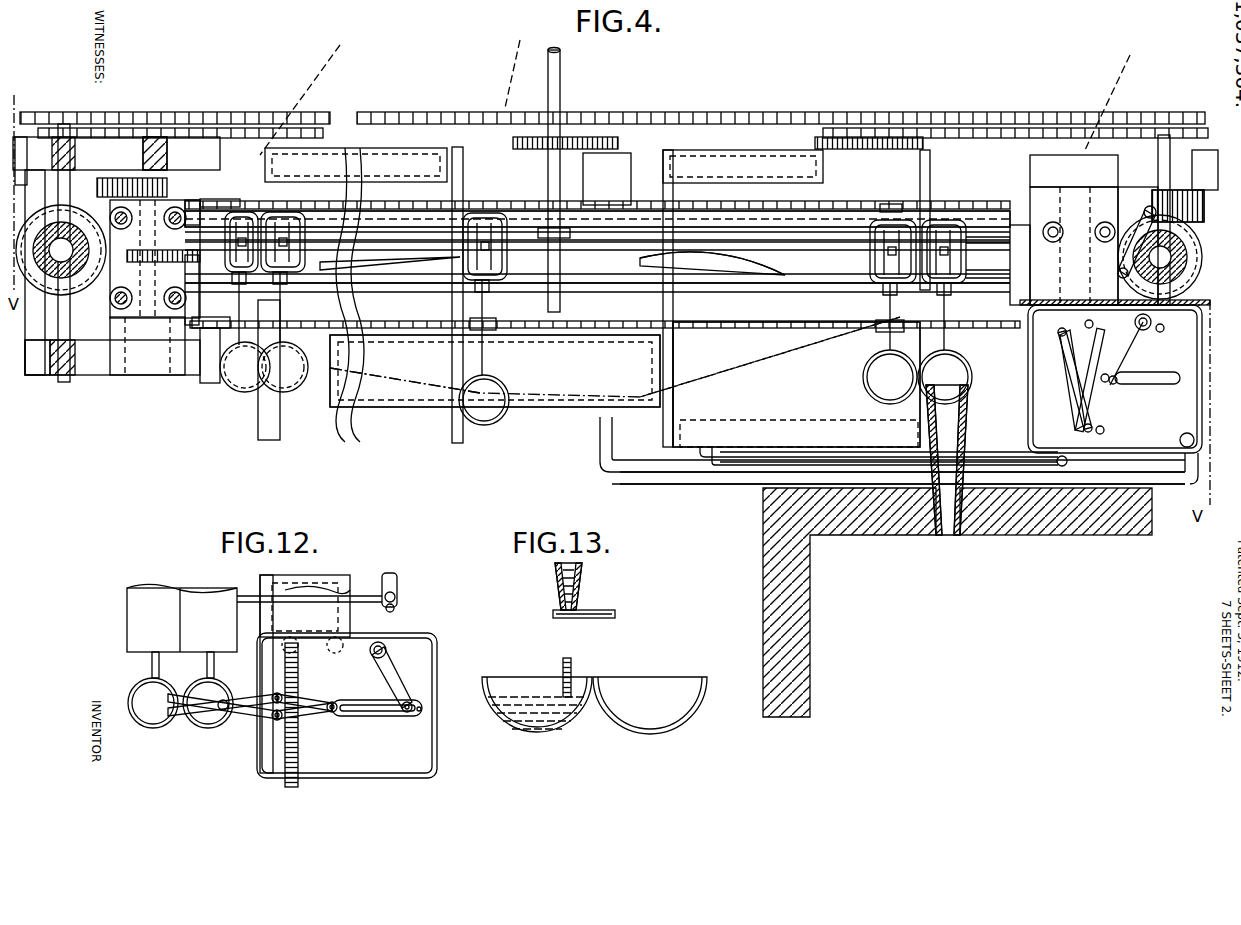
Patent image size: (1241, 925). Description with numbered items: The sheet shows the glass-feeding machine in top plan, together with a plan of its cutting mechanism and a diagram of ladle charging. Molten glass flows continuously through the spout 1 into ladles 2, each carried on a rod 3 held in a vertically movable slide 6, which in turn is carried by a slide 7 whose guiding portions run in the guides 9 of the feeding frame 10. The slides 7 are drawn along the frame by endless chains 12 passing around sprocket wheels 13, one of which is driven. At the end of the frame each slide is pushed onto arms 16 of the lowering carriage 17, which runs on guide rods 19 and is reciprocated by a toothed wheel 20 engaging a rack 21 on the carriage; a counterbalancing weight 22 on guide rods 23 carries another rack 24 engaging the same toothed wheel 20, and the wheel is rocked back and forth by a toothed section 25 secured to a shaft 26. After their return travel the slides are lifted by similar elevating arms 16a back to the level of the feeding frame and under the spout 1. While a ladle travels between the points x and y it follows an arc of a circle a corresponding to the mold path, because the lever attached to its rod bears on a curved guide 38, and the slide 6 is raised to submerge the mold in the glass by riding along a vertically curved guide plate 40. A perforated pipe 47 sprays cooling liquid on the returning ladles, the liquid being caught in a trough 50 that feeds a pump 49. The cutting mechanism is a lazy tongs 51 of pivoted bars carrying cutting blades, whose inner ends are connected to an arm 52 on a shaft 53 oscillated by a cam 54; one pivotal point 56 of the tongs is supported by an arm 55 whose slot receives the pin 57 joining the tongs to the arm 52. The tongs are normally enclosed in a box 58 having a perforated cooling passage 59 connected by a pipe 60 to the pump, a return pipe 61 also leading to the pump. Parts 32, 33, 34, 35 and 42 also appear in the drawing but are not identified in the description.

In FIG. 4, the spout 1 is at (956, 425).
In FIG. 13, the spout 1 is at (582, 580).
In FIG. 4, the ladle 2 is at (245, 392).
In FIG. 12, the ladle 2 is at (153, 722).
In FIG. 13, the ladle 2 is at (612, 733).
In FIG. 4, the ladle rod 3 is at (490, 355).
In FIG. 4, the vertically movable slide 6 is at (462, 247).
In FIG. 4, the slide 7 is at (325, 250).
In FIG. 12, the slide 7 is at (200, 590).
In FIG. 4, the guide 9 is at (400, 232).
In FIG. 4, the feeding frame 10 is at (760, 237).
In FIG. 4, the endless chain 12 is at (496, 208).
In FIG. 4, the sprocket wheel 13 is at (213, 203).
In FIG. 4, the arm 16 is at (185, 223).
In FIG. 4, the elevating arm 16a is at (1012, 330).
In FIG. 4, the lowering carriage 17 is at (200, 262).
In FIG. 4, the guide rod 19 is at (178, 212).
In FIG. 4, the toothed wheel 20 is at (143, 277).
In FIG. 4, the rack 21 is at (173, 317).
In FIG. 4, the weight 22 is at (123, 228).
In FIG. 4, the guide rod 23 is at (170, 140).
In FIG. 4, the rack 24 is at (60, 300).
In FIG. 4, the toothed section 25 is at (120, 180).
In FIG. 4, the shaft 26 is at (20, 183).
In FIG. 12, the rod 32 is at (365, 597).
In FIG. 4, the frame 33 is at (1135, 240).
In FIG. 4, the lever 34 is at (1133, 203).
In FIG. 4, the gear 35 is at (1165, 200).
In FIG. 4, the curved guide 38 is at (702, 258).
In FIG. 4, the vertically curved guide plate 40 is at (790, 290).
In FIG. 4, the clamp 42 is at (500, 326).
In FIG. 4, the pipe 47 is at (522, 410).
In FIG. 4, the pump 49 is at (607, 179).
In FIG. 4, the trough 50 is at (598, 432).
In FIG. 4, the lazy tongs 51 is at (1108, 420).
In FIG. 12, the lazy tongs 51 is at (305, 722).
In FIG. 4, the arm 52 is at (1095, 333).
In FIG. 12, the arm 52 is at (388, 678).
In FIG. 4, the shaft 53 is at (1152, 322).
In FIG. 12, the shaft 53 is at (386, 645).
In FIG. 4, the cam 54 is at (1176, 385).
In FIG. 4, the arm 55 is at (1183, 386).
In FIG. 12, the arm 55 is at (417, 698).
In FIG. 4, the pivotal point 56 is at (1107, 385).
In FIG. 12, the pivotal point 56 is at (332, 714).
In FIG. 4, the pin 57 is at (1116, 384).
In FIG. 12, the pin 57 is at (407, 714).
In FIG. 4, the box 58 is at (1028, 404).
In FIG. 12, the perforated passage 59 is at (285, 745).
In FIG. 4, the pipe 60 is at (1000, 465).
In FIG. 4, the return pipe 61 is at (1098, 484).
In FIG. 4, the circle a is at (88, 114).
In FIG. 4, the point x is at (770, 358).
In FIG. 4, the point y is at (445, 395).